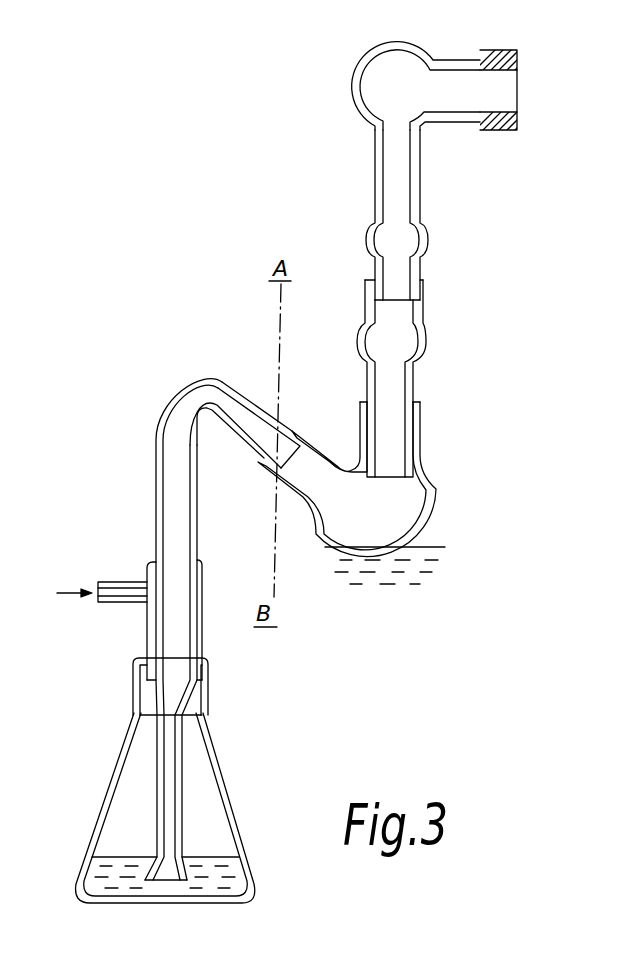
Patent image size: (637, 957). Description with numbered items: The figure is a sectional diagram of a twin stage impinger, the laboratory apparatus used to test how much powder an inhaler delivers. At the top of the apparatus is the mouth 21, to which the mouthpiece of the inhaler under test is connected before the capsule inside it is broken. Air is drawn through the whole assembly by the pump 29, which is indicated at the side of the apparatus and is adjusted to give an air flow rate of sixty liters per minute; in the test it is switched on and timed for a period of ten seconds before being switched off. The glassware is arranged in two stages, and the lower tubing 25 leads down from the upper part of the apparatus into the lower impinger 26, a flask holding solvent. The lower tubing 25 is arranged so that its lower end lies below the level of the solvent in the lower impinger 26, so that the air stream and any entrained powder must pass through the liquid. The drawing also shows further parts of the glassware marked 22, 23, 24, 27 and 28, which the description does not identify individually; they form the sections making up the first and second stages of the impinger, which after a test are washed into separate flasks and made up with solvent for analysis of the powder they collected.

The mouth 21 is at (515, 55).
The distillation/condenser tube with bulb and bulges 22 is at (418, 263).
The receiving flask 23 is at (450, 503).
The collected liquid in receiving flask 24 is at (421, 577).
The lower tubing 25 is at (156, 430).
The lower impinger 26 is at (233, 810).
The absorption liquid in Erlenmeyer flask 27 is at (95, 873).
The side arm / gas outlet 28 is at (120, 607).
The pump 29 is at (52, 605).